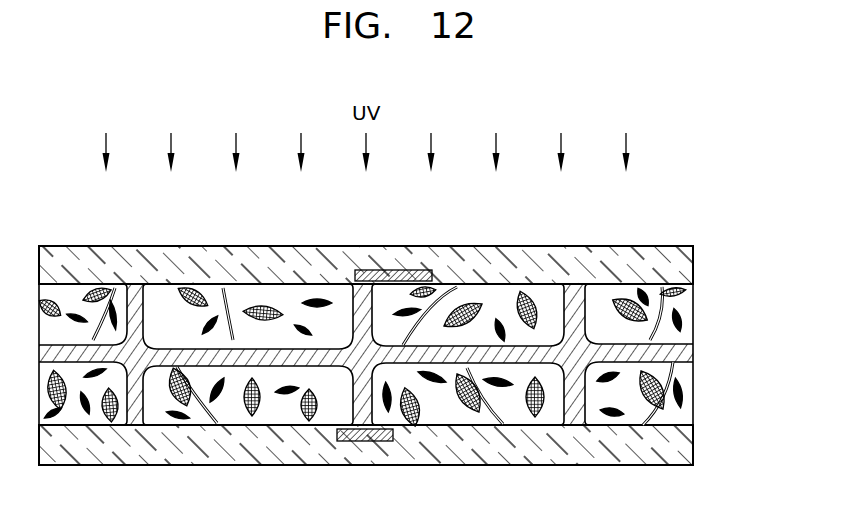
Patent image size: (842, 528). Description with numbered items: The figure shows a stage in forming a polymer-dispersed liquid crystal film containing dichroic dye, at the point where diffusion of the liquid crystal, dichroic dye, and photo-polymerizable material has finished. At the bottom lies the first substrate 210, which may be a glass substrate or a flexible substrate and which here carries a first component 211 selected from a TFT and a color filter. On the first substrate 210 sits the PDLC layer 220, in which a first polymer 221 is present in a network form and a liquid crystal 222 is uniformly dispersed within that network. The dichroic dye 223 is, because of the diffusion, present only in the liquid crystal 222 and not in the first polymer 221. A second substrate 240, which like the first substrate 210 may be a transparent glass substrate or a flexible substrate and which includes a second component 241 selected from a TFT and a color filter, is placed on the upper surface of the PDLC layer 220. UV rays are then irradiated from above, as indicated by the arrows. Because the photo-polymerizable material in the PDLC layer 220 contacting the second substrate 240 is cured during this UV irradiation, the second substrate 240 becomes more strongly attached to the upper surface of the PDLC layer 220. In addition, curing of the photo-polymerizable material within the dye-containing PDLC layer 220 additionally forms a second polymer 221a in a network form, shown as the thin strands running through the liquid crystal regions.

The first substrate 210 is at (693, 447).
The first component 211 is at (362, 441).
The PDLC layer 220 is at (433, 400).
The first polymer 221 is at (693, 348).
The second polymer 221a is at (497, 418).
The liquid crystal 222 is at (688, 375).
The dichroic dye 223 is at (680, 398).
The second substrate 240 is at (693, 269).
The second component 241 is at (392, 270).